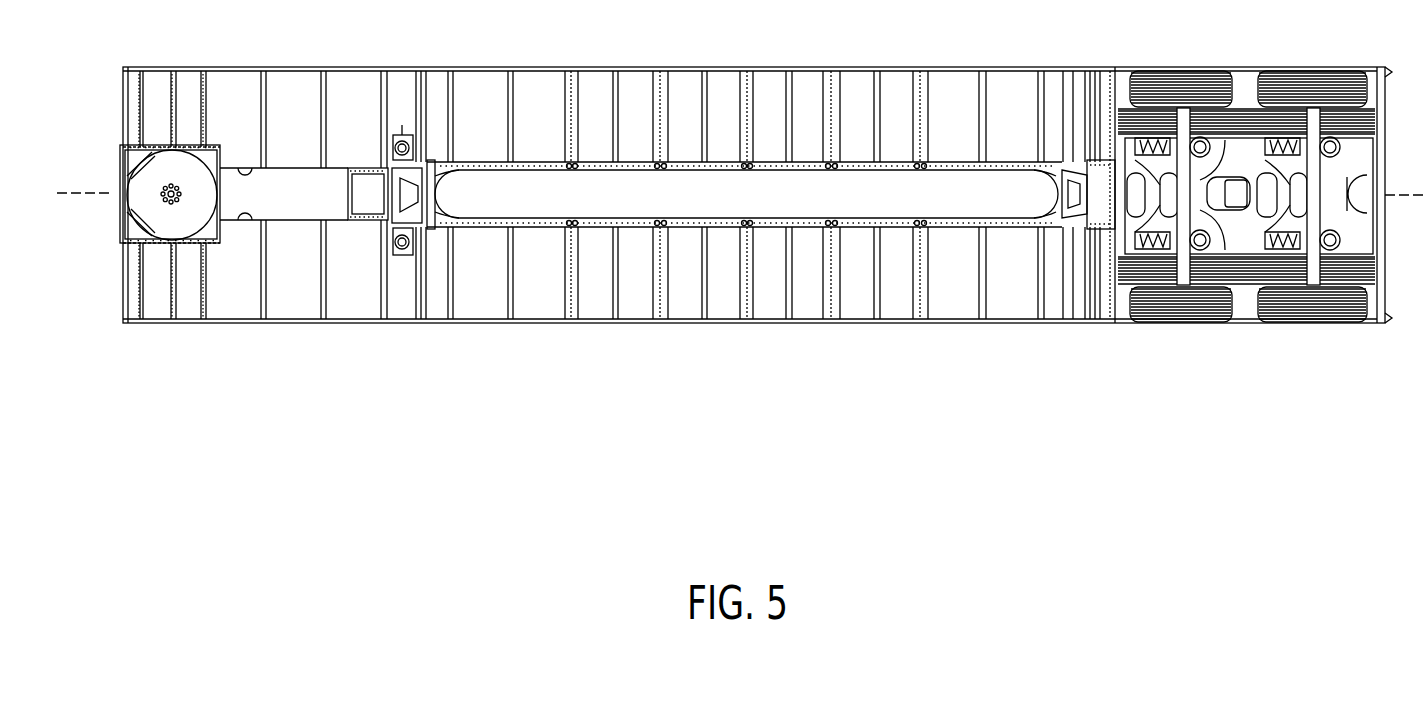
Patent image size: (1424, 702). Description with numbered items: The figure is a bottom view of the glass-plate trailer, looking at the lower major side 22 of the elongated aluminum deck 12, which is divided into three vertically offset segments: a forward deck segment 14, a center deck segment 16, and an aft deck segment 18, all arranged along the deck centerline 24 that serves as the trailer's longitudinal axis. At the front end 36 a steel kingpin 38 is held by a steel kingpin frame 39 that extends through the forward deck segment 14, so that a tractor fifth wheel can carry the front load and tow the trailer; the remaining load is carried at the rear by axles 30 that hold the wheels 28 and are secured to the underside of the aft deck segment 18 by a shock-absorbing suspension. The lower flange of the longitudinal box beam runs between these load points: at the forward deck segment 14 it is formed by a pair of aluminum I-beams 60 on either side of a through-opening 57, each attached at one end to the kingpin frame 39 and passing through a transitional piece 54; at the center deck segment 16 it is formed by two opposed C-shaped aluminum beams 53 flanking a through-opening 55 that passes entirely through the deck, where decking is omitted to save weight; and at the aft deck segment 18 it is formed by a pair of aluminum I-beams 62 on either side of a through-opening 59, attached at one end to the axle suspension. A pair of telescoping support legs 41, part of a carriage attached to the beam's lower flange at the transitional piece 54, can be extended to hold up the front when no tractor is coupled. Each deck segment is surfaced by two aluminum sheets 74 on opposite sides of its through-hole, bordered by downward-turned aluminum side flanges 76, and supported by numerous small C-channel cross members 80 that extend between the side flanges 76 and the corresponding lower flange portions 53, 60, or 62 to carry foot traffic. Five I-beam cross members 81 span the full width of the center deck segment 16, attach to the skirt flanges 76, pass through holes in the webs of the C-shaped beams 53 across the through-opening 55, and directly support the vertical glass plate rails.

The deck 12 is at (594, 80).
The forward deck segment 14 is at (345, 300).
The center deck segment 16 is at (628, 300).
The aft deck segment 18 is at (1093, 307).
The lower major side 22 is at (1010, 295).
The centerline 24 is at (63, 198).
The wheels 28 is at (1313, 303).
The axles 30 is at (1192, 182).
The front end 36 is at (173, 336).
The kingpin 38 is at (168, 196).
The kingpin frame 39 is at (130, 158).
The telescoping support legs 41 is at (398, 260).
The C-shaped aluminum beams 53 is at (500, 173).
The transitional piece 54 is at (432, 160).
The through-opening 55 is at (746, 194).
The through-opening 57 is at (304, 194).
The through-opening 59 is at (1117, 192).
The I-beams 60 is at (243, 172).
The I-beams 62 is at (1152, 160).
The aluminum sheets 74 is at (1075, 335).
The side flanges 76 is at (265, 85).
The C-channel cross members 80 is at (207, 95).
The I-beam cross members 81 is at (572, 185).